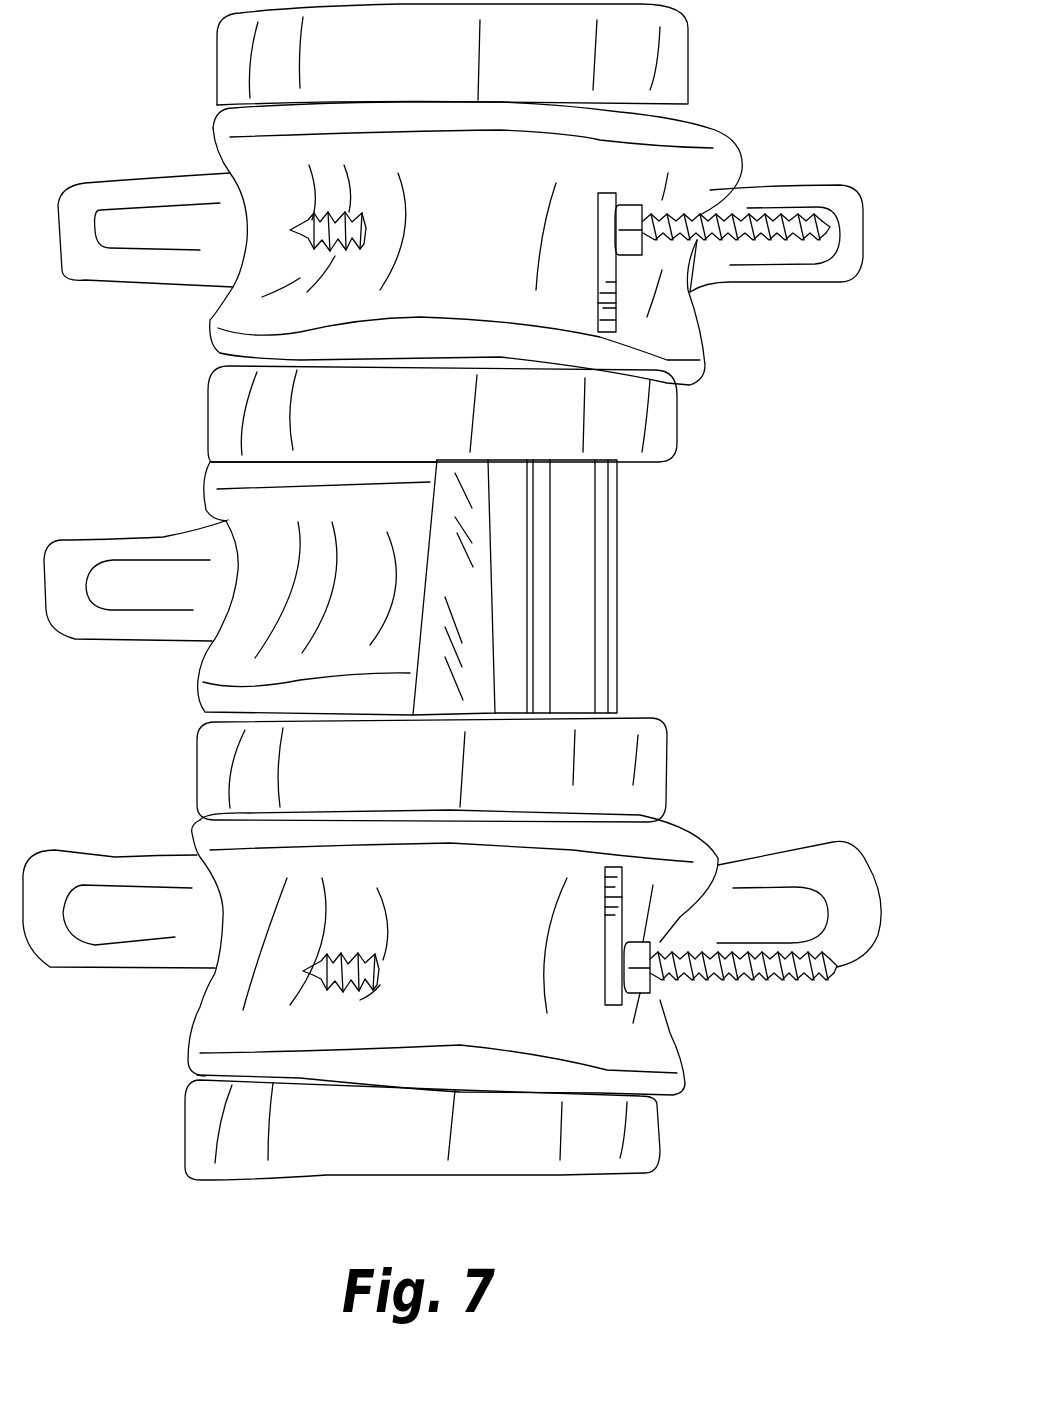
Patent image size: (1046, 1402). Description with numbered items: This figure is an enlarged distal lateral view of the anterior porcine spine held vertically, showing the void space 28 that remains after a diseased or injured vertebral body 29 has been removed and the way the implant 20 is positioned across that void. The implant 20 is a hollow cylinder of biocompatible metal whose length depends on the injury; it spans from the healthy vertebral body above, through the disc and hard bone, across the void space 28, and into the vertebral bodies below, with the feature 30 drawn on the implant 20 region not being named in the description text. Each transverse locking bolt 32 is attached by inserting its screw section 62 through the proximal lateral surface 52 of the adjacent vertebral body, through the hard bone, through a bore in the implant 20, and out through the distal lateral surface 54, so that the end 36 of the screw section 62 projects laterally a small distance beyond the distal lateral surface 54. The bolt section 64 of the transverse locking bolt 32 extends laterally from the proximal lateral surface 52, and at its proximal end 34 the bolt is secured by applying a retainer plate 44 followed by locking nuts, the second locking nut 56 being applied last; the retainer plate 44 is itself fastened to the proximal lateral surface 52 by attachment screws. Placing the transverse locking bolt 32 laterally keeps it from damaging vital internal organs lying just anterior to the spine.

The implant 20 is at (593, 587).
The void space 28 is at (513, 610).
The diseased or injured vertebral body 29 is at (395, 652).
The plate edge 30 is at (478, 653).
The transverse locking bolt 32 is at (763, 228).
The proximal end 34 is at (830, 218).
The end 36 is at (300, 220).
The retainer plate 44 is at (608, 193).
The proximal lateral surface 52 is at (633, 307).
The distal lateral surface 54 is at (335, 262).
The second locking nut 56 is at (633, 252).
The screw section 62 is at (340, 246).
The bolt section 64 is at (717, 213).